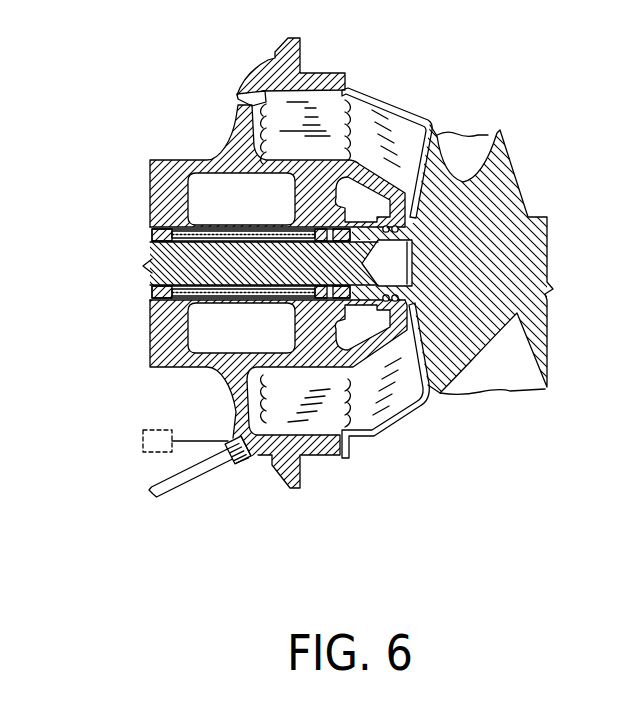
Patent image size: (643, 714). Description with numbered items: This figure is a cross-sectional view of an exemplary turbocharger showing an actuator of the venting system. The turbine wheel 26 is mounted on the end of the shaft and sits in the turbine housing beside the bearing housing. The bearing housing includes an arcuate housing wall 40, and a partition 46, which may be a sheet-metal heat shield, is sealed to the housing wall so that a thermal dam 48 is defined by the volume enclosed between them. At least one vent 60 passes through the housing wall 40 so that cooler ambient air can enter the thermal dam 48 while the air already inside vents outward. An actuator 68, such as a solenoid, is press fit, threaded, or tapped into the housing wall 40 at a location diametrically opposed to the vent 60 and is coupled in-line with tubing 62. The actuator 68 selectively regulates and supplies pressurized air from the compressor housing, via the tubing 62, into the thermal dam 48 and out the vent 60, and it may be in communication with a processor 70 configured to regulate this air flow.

The turbine wheel 26 is at (520, 243).
The housing wall 40 is at (237, 404).
The partition 46 is at (393, 121).
The thermal dam 48 is at (330, 133).
The vent 60 is at (237, 96).
The tubing 62 is at (180, 490).
The actuator 68 is at (243, 462).
The processor 70 is at (143, 431).